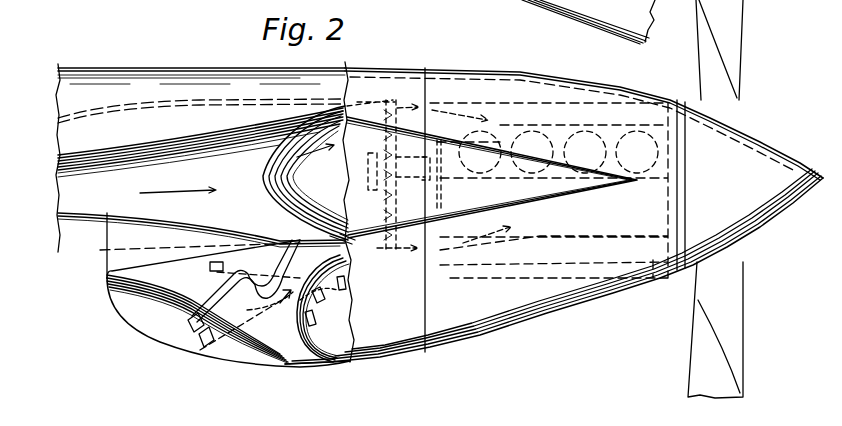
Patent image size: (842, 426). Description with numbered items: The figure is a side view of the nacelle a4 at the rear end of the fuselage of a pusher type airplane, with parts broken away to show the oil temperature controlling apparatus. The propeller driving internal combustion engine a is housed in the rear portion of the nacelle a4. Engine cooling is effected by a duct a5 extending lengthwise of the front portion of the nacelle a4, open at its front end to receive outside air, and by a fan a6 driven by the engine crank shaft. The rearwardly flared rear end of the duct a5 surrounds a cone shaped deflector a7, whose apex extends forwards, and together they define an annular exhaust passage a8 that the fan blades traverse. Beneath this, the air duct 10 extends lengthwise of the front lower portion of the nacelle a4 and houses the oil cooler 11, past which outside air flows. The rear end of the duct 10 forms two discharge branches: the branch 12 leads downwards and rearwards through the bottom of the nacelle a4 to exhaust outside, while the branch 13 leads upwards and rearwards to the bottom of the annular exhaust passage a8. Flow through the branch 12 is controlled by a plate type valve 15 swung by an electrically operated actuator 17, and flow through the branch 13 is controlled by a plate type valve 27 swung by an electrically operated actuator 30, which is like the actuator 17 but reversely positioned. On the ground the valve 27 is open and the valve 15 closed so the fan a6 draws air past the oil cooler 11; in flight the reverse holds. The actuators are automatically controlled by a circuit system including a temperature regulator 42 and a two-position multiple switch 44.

The propeller driving internal combustion engine a is at (618, 118).
The nacelle a4 is at (531, 324).
The duct a5 is at (137, 148).
The fan a6 is at (398, 103).
The cone shaped deflector a7 is at (272, 190).
The annular exhaust passage a8 is at (358, 104).
The air duct 10 is at (150, 289).
The oil cooler 11 is at (189, 331).
The discharge branch 12 is at (249, 341).
The discharge branch 13 is at (298, 276).
The plate type valve 15 is at (292, 365).
The electrically operated actuator 17 is at (315, 325).
The plate type valve 27 is at (348, 236).
The electrically operated actuator 30 is at (346, 283).
The temperature regulator 42 is at (201, 341).
The 2-position multiple switch 44 is at (322, 305).